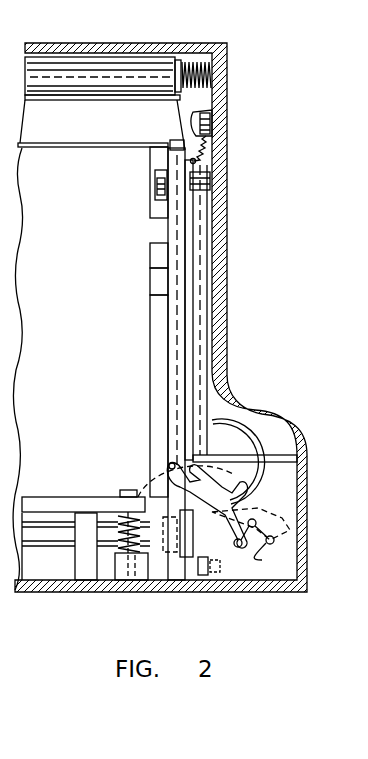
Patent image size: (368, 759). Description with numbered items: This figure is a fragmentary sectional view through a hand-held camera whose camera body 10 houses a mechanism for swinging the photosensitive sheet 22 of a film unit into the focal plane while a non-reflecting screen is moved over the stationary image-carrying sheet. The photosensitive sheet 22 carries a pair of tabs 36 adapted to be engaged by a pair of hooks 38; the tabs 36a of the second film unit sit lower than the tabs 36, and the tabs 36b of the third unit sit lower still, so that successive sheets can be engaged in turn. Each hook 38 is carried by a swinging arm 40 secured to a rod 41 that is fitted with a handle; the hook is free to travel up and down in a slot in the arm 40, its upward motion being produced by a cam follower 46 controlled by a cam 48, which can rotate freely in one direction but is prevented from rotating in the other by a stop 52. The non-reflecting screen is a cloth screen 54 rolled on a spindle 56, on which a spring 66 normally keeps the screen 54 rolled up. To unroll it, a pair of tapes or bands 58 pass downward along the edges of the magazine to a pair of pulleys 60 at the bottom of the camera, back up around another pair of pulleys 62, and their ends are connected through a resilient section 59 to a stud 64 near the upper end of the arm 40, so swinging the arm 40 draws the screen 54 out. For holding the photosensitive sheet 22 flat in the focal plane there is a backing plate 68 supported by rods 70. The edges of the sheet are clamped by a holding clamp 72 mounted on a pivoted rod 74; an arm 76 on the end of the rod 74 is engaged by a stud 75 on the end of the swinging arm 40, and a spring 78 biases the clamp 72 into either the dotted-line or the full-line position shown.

The camera body 10 is at (228, 583).
The photosensitive sheet 22 is at (72, 330).
The tabs 36 is at (160, 228).
The tabs 36a is at (152, 257).
The tabs 36b is at (160, 282).
The hooks 38 is at (163, 177).
The arm 40 is at (173, 357).
The rod 41 is at (52, 534).
The cam follower 46 is at (208, 181).
The cam 48 is at (203, 260).
The stop 52 is at (280, 448).
The cloth screen 54 is at (88, 65).
The spindle 56 is at (150, 72).
The tapes or bands 58 is at (203, 233).
The resilient section 59 is at (192, 149).
The pulleys 60 is at (208, 562).
The pulleys 62 is at (206, 122).
The stud 64 is at (196, 161).
The spring 66 is at (199, 62).
The backing plate 68 is at (38, 503).
The rods 70 is at (84, 566).
The holding clamp 72 is at (236, 424).
The pivoted rod 74 is at (238, 482).
The stud 75 is at (165, 145).
The arm 76 is at (172, 464).
The spring 78 is at (265, 545).